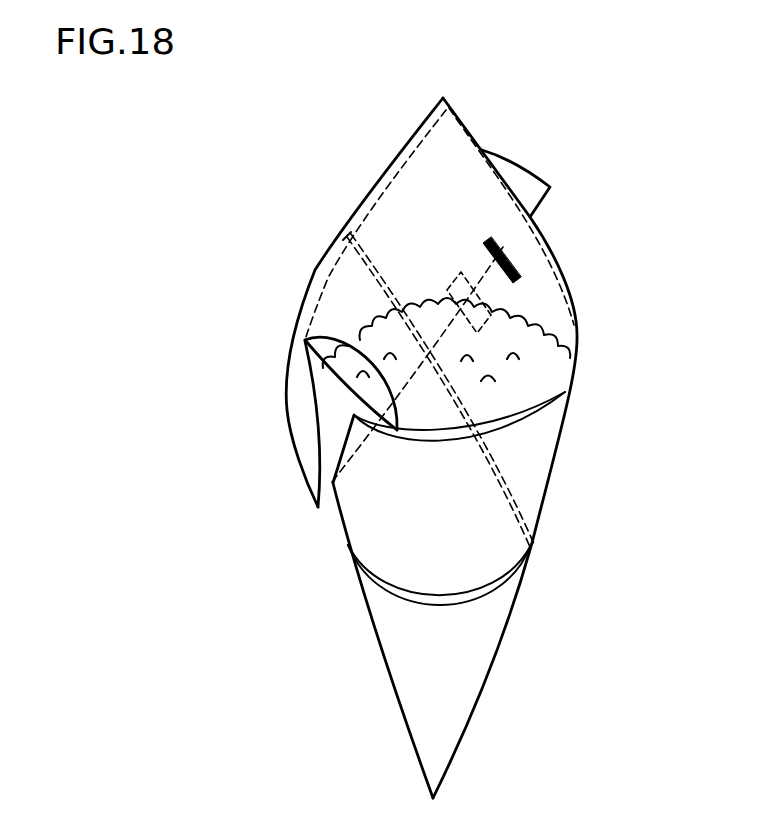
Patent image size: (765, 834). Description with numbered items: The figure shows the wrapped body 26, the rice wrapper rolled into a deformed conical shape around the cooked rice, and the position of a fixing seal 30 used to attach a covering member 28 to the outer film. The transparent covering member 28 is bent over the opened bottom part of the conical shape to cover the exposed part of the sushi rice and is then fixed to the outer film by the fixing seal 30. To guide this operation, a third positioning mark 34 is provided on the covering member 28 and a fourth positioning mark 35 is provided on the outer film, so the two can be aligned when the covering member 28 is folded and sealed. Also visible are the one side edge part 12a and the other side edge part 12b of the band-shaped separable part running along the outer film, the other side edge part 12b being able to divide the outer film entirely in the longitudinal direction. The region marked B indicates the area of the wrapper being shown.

The wrapped body 26 is at (584, 223).
The covering member 28 is at (316, 457).
The fixing seal 30 is at (482, 300).
The third positioning mark 34 is at (494, 234).
The fourth positioning mark 35 is at (518, 266).
The one side edge part 12a is at (517, 482).
The other side edge part 12b is at (528, 514).
The region B is at (442, 140).